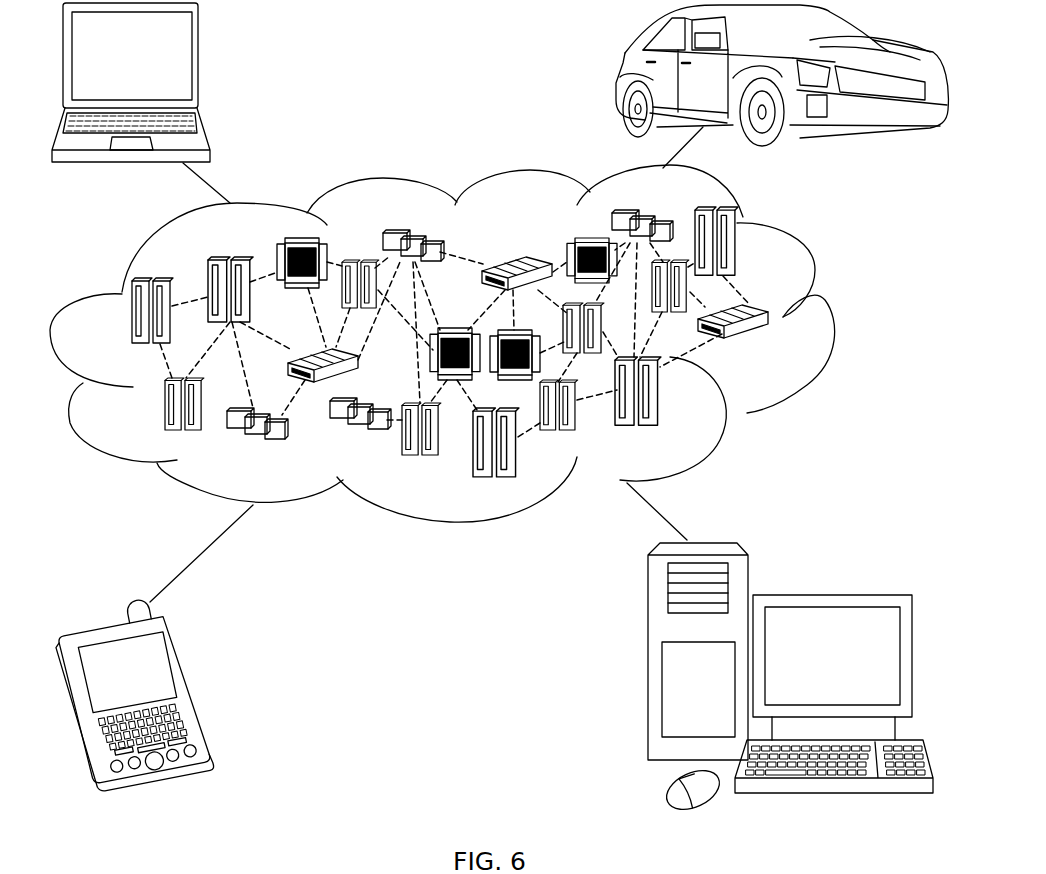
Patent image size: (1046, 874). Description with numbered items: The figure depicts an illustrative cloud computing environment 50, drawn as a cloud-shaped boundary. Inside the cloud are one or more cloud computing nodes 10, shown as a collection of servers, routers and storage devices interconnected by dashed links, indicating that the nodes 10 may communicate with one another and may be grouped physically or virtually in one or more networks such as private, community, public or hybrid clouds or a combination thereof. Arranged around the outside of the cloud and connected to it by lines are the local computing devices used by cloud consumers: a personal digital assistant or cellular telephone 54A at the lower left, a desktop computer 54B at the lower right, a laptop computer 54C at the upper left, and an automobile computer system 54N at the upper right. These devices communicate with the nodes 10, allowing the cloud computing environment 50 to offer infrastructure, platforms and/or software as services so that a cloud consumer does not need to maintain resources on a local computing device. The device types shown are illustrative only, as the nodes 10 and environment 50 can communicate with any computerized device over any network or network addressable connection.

The cloud computing node 10 is at (773, 348).
The cloud computing environment 50 is at (832, 320).
The personal digital assistant or cellular telephone 54A is at (188, 685).
The desktop computer 54B is at (828, 594).
The laptop computer 54C is at (198, 62).
The automobile computer system 54N is at (622, 77).